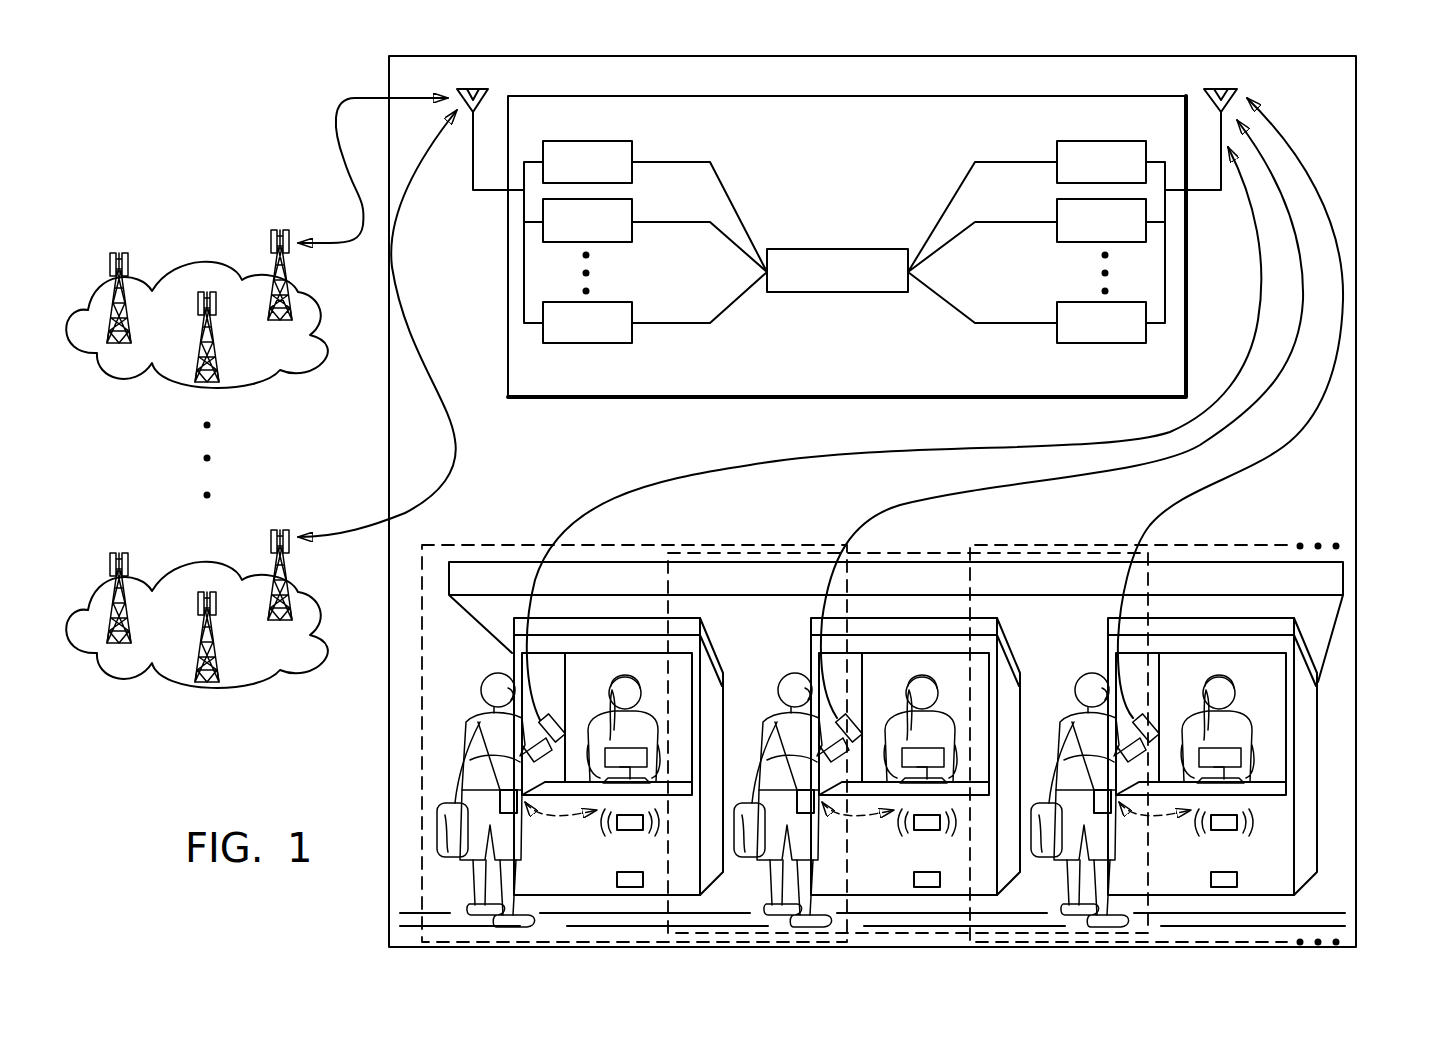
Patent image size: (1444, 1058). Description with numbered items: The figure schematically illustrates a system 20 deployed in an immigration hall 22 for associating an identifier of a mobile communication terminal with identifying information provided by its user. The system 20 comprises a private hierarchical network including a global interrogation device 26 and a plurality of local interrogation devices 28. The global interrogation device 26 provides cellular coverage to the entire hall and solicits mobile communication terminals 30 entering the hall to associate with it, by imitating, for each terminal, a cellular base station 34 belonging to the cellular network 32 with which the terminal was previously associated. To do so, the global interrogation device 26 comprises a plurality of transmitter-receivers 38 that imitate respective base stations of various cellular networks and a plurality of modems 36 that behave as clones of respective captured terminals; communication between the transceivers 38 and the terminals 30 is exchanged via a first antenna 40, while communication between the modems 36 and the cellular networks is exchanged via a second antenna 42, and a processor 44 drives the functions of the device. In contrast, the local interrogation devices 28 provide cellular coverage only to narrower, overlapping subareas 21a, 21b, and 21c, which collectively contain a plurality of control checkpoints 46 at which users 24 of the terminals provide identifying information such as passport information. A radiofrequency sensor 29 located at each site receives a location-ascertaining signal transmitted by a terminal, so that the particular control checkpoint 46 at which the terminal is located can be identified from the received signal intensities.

The system 20 is at (1373, 187).
The immigration hall 22 is at (389, 722).
The global interrogation device 26 is at (722, 96).
The modems 36 is at (632, 148).
The transmitter-receivers 38 is at (1057, 150).
The processor 44 is at (830, 249).
The second antenna 42 is at (483, 90).
The first antenna 40 is at (1210, 90).
The cellular network 32 is at (204, 261).
The cellular base station 34 is at (117, 255).
The subarea 21a is at (478, 545).
The subarea 21b is at (892, 553).
The subarea 21c is at (1196, 545).
The control checkpoint 46 is at (718, 647).
The user 24 is at (487, 688).
The mobile communication terminal 30 is at (500, 790).
The local interrogation device 28 is at (627, 832).
The radiofrequency sensor 29 is at (617, 879).